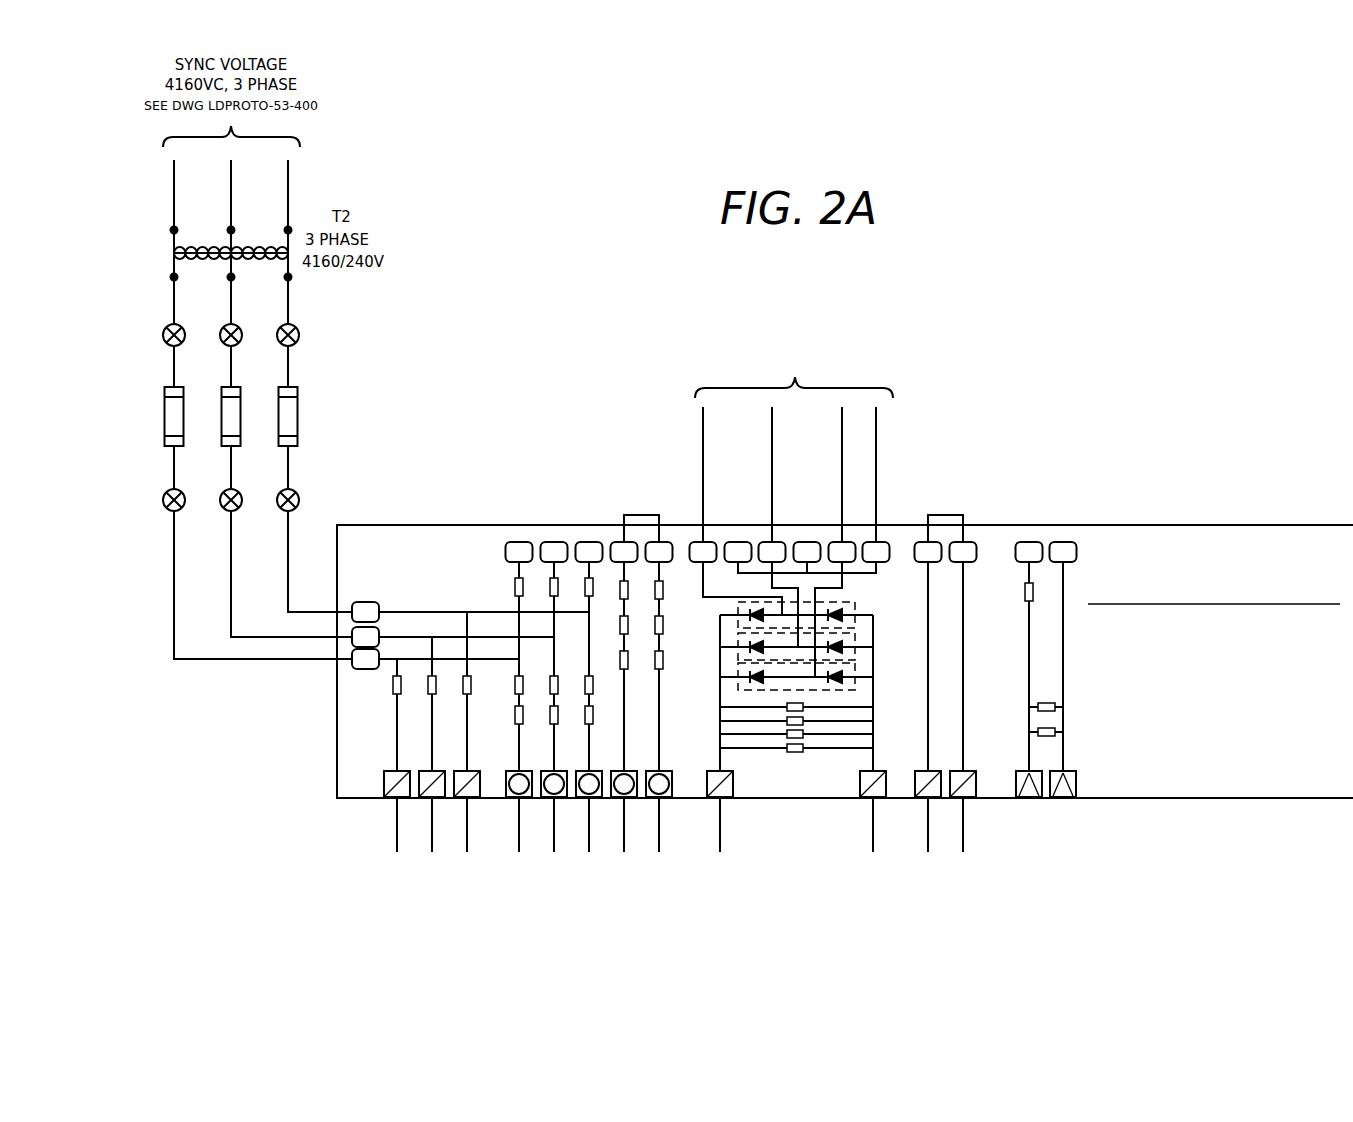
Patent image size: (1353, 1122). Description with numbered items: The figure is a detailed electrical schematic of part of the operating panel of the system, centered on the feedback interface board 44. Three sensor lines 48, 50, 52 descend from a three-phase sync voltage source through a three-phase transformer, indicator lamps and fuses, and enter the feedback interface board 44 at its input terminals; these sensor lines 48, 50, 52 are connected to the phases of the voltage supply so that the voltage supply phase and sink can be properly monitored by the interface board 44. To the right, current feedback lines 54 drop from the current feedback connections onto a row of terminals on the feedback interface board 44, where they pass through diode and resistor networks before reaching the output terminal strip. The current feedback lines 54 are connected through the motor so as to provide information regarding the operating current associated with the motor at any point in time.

The feedback interface board 44 is at (1172, 537).
The sensor line 48 is at (174, 560).
The sensor line 50 is at (231, 602).
The sensor line 52 is at (291, 523).
The current feedback lines 54 is at (914, 438).